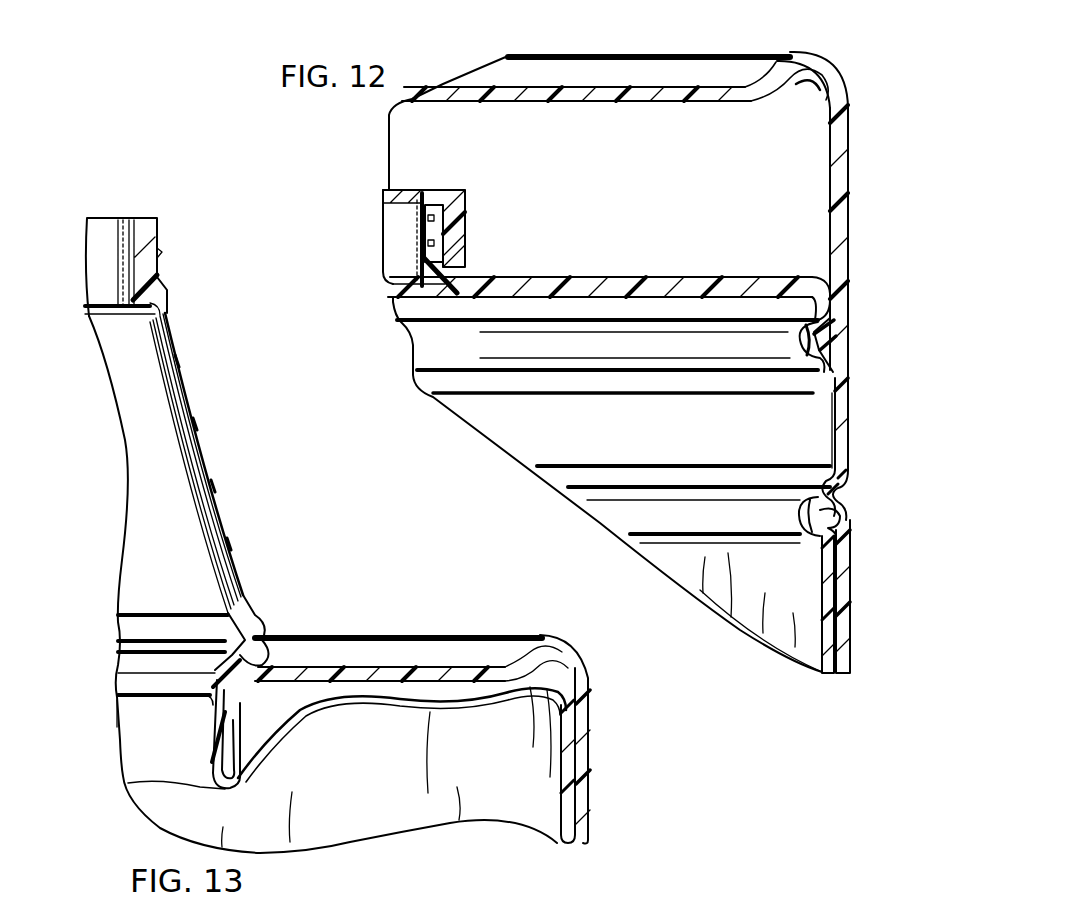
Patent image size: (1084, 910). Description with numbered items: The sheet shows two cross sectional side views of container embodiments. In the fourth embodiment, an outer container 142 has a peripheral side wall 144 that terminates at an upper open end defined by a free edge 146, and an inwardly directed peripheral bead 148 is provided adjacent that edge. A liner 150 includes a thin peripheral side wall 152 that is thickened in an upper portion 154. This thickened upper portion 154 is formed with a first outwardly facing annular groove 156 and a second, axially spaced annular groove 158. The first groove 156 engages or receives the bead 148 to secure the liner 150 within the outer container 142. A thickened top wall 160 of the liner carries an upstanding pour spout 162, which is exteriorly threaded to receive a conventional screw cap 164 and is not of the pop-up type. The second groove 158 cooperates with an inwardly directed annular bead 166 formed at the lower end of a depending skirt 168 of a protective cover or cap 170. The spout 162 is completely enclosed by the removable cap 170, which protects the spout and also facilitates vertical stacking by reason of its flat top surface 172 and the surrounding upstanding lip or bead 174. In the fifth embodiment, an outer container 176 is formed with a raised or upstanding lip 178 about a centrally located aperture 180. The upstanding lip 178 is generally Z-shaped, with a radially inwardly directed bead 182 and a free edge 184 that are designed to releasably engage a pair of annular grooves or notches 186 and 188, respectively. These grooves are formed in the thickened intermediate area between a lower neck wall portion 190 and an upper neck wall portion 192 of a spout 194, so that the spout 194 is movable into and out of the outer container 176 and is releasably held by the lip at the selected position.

In FIG. 12, the outer container 142 is at (858, 631).
In FIG. 12, the peripheral side wall 144 is at (842, 558).
In FIG. 12, the free edge 146 is at (845, 487).
In FIG. 12, the inwardly directed peripheral bead 148 is at (841, 514).
In FIG. 12, the liner 150 is at (623, 270).
In FIG. 12, the thin peripheral side wall 152 is at (822, 650).
In FIG. 12, the thickened upper portion 154 is at (790, 436).
In FIG. 12, the first outwardly facing annular groove 156 is at (798, 517).
In FIG. 12, the second annular groove 158 is at (798, 340).
In FIG. 12, the thickened top wall 160 is at (758, 282).
In FIG. 12, the upstanding pour spout 162 is at (428, 245).
In FIG. 12, the screw cap 164 is at (455, 212).
In FIG. 12, the inwardly directed annular bead 166 is at (838, 340).
In FIG. 12, the depending skirt 168 is at (843, 142).
In FIG. 12, the protective cover or cap 170 is at (632, 44).
In FIG. 12, the flat top surface 172 is at (607, 102).
In FIG. 12, the upstanding lip or bead 174 is at (810, 52).
In FIG. 13, the outer container 176 is at (600, 719).
In FIG. 13, the raised or upstanding lip 178 is at (280, 640).
In FIG. 13, the centrally located aperture 180 is at (122, 716).
In FIG. 13, the radially inwardly directed bead 182 is at (235, 668).
In FIG. 13, the free edge 184 is at (235, 614).
In FIG. 13, the annular groove or notch 186 is at (262, 656).
In FIG. 13, the annular groove or notch 188 is at (203, 699).
In FIG. 13, the lower neck wall portion 190 is at (220, 761).
In FIG. 13, the upper neck wall portion 192 is at (240, 546).
In FIG. 13, the spout 194 is at (226, 365).